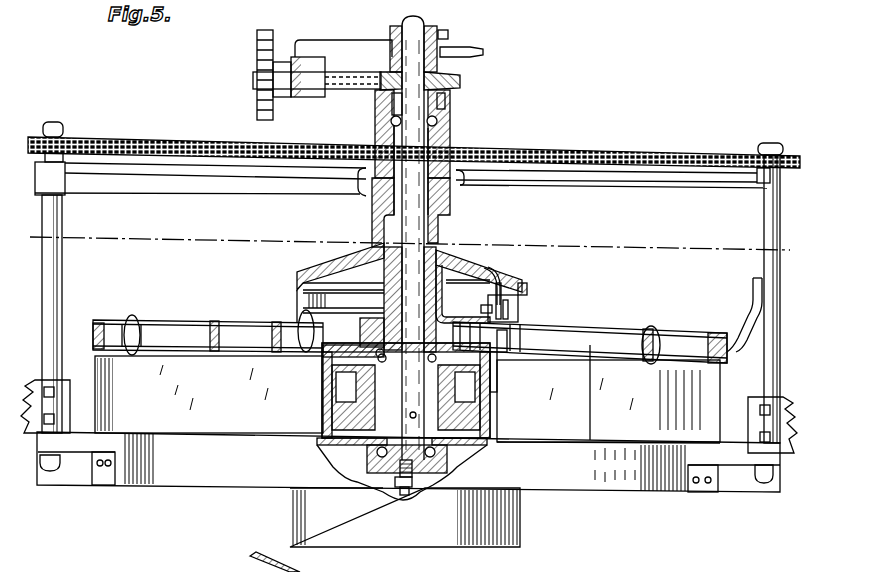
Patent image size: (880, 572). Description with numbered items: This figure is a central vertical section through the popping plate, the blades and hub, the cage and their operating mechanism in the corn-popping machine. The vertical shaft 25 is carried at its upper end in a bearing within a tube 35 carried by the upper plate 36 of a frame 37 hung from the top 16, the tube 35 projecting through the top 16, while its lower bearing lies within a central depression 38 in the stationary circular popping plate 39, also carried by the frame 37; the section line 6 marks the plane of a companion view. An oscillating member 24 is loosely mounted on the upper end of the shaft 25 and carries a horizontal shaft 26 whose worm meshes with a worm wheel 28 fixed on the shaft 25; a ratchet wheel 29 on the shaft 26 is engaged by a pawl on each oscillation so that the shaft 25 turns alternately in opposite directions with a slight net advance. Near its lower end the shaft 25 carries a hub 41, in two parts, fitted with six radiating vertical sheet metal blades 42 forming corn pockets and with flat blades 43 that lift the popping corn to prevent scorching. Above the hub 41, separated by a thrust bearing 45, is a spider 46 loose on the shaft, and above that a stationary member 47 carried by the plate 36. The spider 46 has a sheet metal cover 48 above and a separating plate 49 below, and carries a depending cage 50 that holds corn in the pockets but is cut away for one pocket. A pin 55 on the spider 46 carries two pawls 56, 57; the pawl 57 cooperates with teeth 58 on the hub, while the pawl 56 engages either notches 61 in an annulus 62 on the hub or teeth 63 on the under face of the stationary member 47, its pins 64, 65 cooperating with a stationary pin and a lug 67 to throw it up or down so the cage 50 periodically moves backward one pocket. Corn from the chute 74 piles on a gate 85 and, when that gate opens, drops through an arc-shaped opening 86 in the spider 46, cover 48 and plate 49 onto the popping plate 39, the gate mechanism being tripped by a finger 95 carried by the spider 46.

The section line 6— 6 is at (32, 228).
The top 16 is at (589, 152).
The oscillating member 24 is at (396, 48).
The vertical shaft 25 is at (426, 158).
The horizontal shaft 26 is at (356, 92).
The worm wheel 28 is at (462, 83).
The ratchet wheel 29 is at (263, 101).
The tube 35 is at (451, 129).
The upper plate 36 is at (596, 195).
The frame 37 is at (63, 294).
The central depression 38 is at (433, 478).
The popping plate 39 is at (642, 494).
The hub 41 is at (437, 441).
The vertical sheet metal blades 42 is at (407, 399).
The flat blades 43 is at (553, 442).
The thrust bearing 45 is at (349, 407).
The spider 46 is at (441, 281).
The stationary member 47 is at (349, 268).
The sheet metal cover 48 is at (651, 330).
The separating plate 49 is at (605, 366).
The cage 50 is at (730, 373).
The pin 55 is at (531, 331).
The pawl 56 is at (506, 342).
The pawl 57 is at (473, 362).
The teeth 58 is at (318, 390).
The notches 61 is at (500, 369).
The annulus 62 is at (322, 354).
The teeth 63 is at (495, 285).
The pin 64 is at (502, 305).
The pin 65 is at (509, 316).
The lug 67 is at (481, 308).
The chute 74 is at (304, 562).
The gate 85 is at (133, 571).
The arc-shaped opening 86 is at (244, 321).
The finger 95 is at (757, 301).